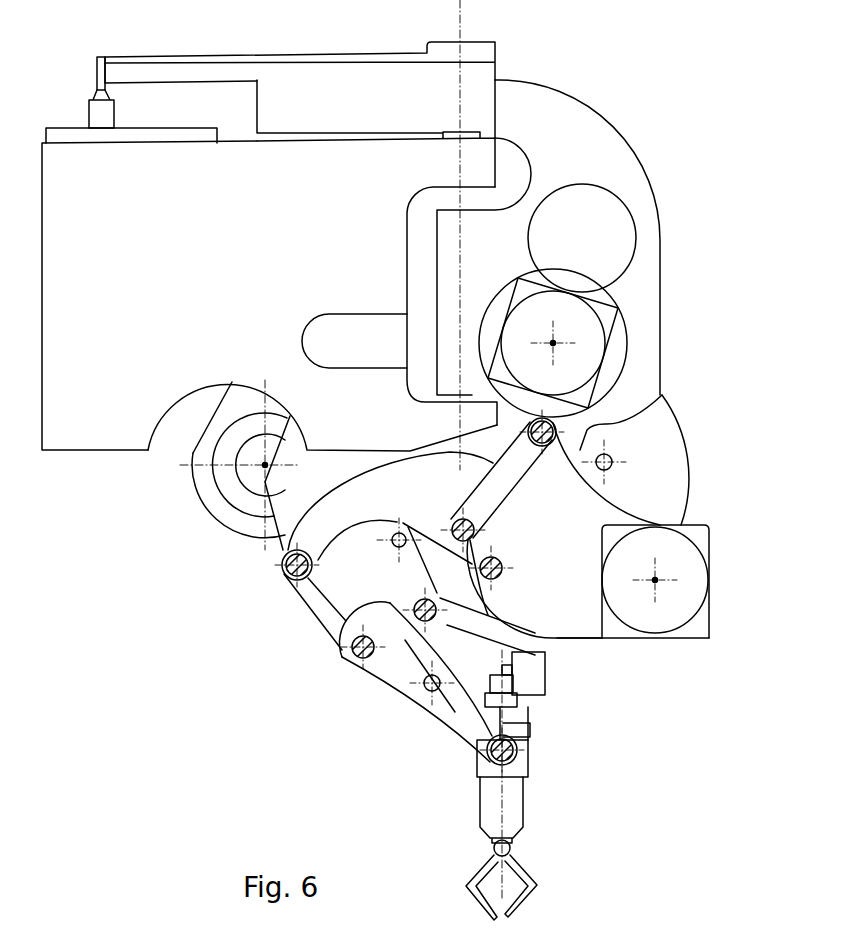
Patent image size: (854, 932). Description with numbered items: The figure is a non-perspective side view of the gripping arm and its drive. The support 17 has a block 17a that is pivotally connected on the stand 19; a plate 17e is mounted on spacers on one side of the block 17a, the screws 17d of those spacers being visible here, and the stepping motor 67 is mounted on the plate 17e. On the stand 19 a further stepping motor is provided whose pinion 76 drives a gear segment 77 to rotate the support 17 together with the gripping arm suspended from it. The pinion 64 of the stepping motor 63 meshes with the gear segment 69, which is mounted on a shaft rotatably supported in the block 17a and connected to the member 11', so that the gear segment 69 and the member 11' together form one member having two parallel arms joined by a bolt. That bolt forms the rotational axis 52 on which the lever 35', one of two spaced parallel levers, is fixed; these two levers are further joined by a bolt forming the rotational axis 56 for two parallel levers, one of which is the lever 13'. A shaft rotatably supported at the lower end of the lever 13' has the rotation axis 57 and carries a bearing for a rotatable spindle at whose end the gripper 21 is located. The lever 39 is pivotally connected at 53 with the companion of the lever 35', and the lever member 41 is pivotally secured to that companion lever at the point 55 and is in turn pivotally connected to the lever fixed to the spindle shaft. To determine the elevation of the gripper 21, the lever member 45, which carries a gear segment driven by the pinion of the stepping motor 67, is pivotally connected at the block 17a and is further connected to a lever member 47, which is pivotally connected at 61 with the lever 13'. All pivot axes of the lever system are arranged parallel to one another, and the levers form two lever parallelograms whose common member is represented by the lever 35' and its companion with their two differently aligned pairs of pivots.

The member 11' is at (388, 533).
The lever 13' is at (453, 672).
The support 17 is at (600, 97).
The block 17a is at (623, 137).
The screws 17d is at (545, 446).
The plate 17e is at (587, 640).
The stand 19 is at (102, 453).
The gripper 21 is at (530, 867).
The lever 35' is at (295, 622).
The lever 39 is at (450, 717).
The lever member 41 is at (500, 540).
The lever member 45 is at (687, 447).
The lever member 47 is at (550, 652).
The rotational axis 52 is at (287, 573).
The pivot 53 is at (407, 642).
The pivot 55 is at (400, 530).
The rotational axis 56 is at (353, 663).
The rotation axis 57 is at (527, 757).
The pivot 61 is at (428, 703).
The stepping motor 63 is at (226, 510).
The pinion 64 is at (227, 505).
The stepping motor 67 is at (662, 624).
The gear segment 69 is at (213, 449).
The pinion 76 is at (100, 77).
The gear segment 77 is at (140, 58).